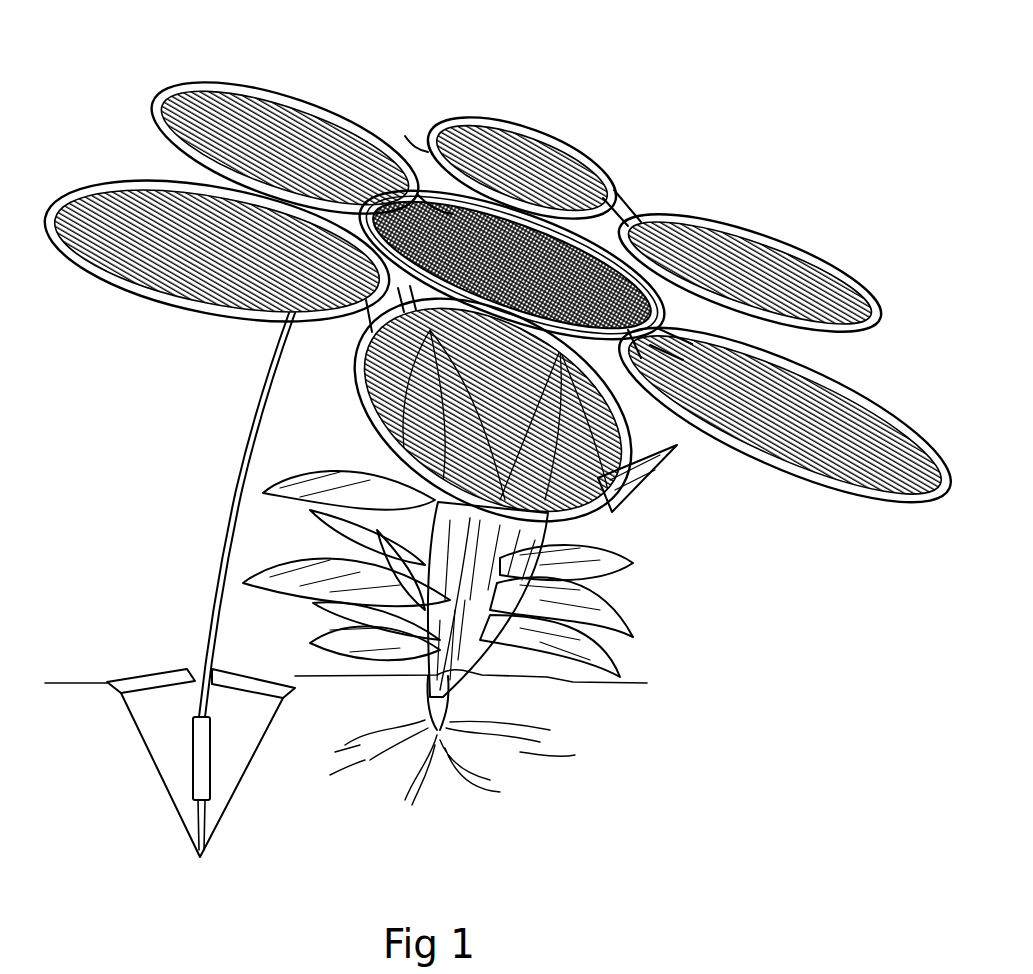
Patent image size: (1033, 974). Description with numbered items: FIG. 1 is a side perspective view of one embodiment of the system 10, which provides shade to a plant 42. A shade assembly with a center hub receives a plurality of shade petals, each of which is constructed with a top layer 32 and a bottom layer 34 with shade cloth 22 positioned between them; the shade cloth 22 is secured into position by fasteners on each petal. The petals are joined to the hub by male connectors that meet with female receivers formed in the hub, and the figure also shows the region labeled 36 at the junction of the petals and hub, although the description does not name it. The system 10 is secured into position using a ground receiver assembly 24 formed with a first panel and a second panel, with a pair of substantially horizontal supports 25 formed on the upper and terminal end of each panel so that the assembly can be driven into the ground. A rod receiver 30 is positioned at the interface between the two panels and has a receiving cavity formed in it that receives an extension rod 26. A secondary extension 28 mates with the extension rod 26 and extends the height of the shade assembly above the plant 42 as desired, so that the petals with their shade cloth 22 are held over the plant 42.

The system 10 is at (618, 113).
The shade cloth 22 is at (273, 128).
The ground receiver assembly 24 is at (137, 728).
The substantially horizontal supports 25 is at (201, 659).
The extension rod 26 is at (200, 603).
The secondary extension 28 is at (263, 383).
The rod receiver 30 is at (213, 747).
The top layer 32 is at (110, 180).
The bottom layer 34 is at (153, 302).
The frame connector 36 is at (402, 136).
The plant 42 is at (530, 642).